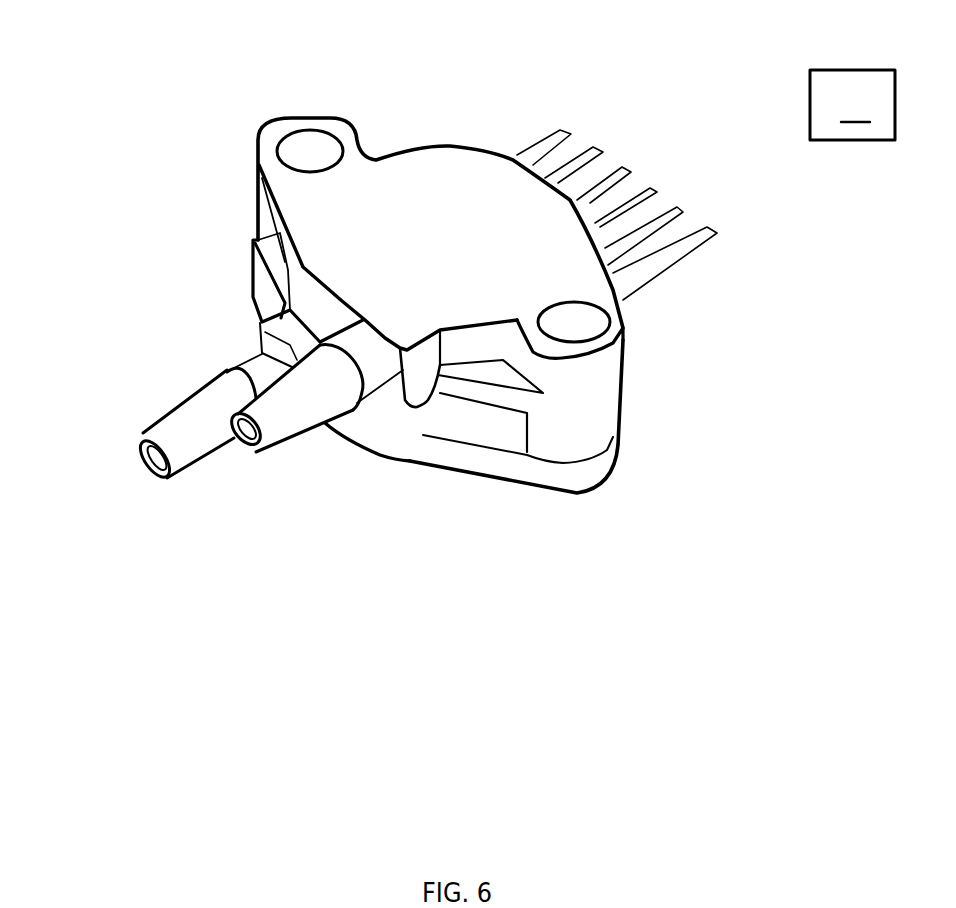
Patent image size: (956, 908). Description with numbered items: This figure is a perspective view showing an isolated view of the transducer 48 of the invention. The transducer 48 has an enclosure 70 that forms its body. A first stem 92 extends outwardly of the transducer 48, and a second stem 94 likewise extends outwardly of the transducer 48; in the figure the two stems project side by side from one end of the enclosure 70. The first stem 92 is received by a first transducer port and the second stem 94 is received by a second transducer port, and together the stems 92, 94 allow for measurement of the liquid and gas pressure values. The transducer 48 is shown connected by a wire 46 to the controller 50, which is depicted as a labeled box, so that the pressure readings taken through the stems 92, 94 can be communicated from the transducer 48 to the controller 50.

The wire 46 is at (663, 120).
The transducer 48 is at (380, 107).
The controller 50 is at (810, 106).
The enclosure 70 is at (620, 422).
The first stem 92 is at (208, 387).
The second stem 94 is at (150, 437).